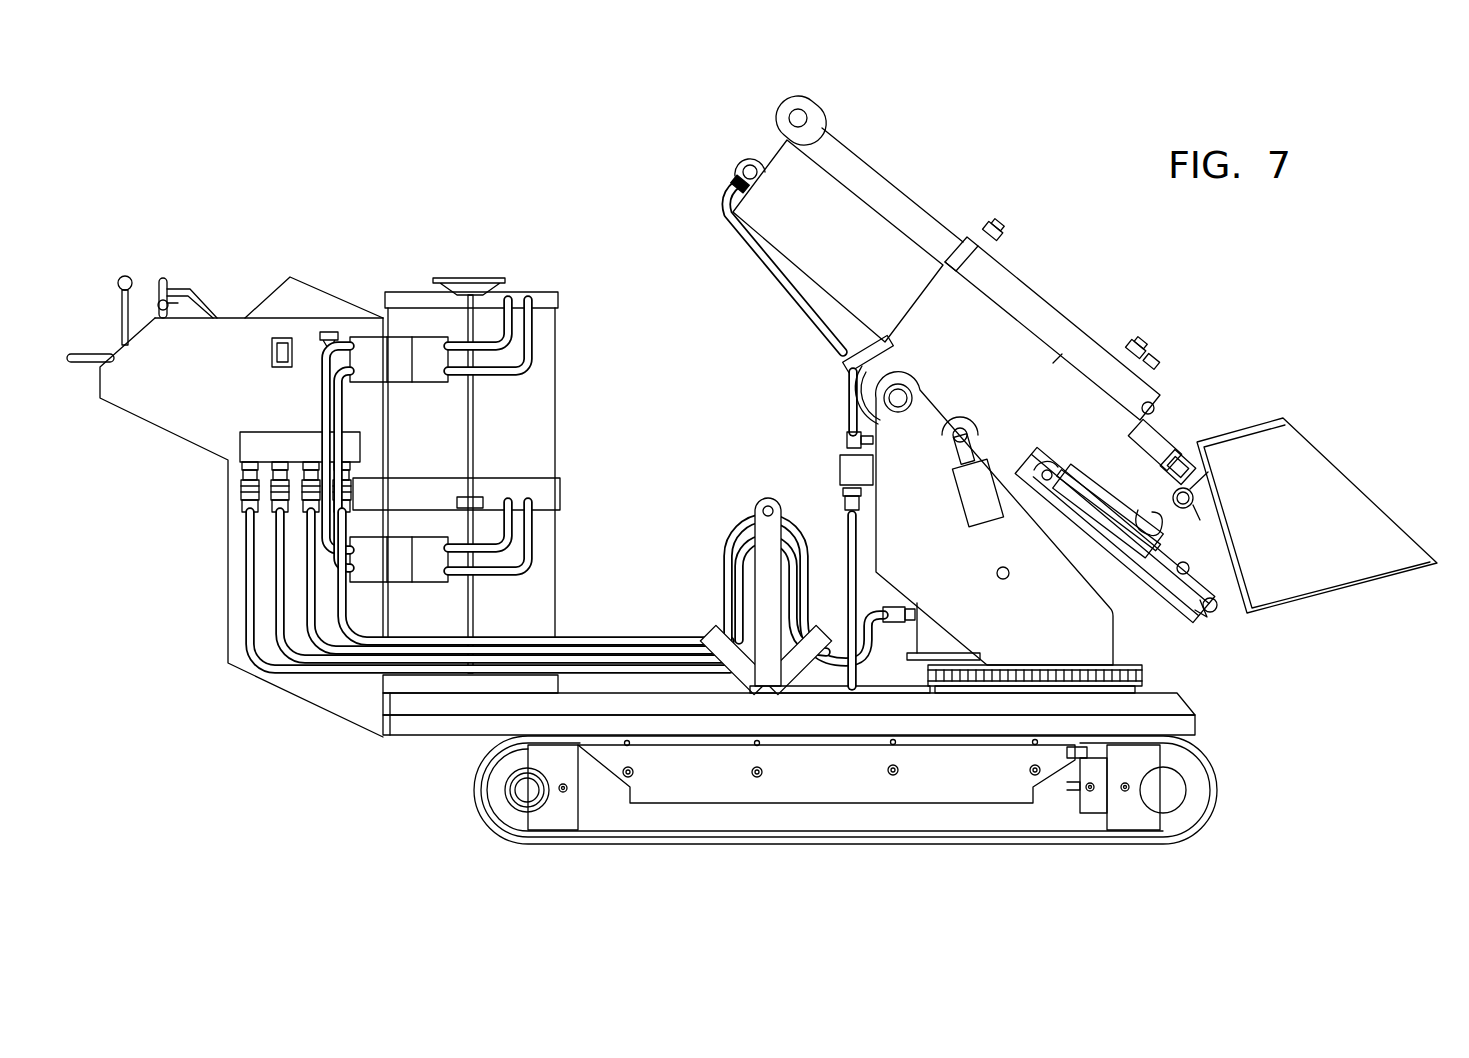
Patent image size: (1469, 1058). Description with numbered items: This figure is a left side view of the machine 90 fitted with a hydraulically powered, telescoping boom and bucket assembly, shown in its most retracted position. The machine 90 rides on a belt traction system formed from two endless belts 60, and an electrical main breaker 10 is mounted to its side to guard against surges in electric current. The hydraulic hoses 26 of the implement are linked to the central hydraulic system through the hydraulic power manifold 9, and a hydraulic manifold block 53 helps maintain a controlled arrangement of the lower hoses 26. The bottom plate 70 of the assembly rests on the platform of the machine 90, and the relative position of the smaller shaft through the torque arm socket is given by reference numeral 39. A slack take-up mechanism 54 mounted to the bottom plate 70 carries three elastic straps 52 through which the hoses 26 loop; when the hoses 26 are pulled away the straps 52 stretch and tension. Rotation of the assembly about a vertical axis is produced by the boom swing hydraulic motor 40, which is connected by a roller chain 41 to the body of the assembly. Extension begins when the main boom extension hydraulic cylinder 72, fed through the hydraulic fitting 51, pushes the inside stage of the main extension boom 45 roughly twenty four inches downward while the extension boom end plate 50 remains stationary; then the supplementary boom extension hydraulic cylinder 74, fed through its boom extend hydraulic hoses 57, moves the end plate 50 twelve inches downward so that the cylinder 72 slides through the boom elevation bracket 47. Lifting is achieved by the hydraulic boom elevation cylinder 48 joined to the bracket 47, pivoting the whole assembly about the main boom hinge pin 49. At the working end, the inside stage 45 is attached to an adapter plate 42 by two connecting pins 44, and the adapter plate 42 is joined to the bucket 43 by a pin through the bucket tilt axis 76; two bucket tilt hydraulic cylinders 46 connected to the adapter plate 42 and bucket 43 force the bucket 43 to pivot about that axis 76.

The machine 90 is at (340, 272).
The electrical main breaker 10 is at (271, 352).
The hydraulic power manifold 9 is at (266, 440).
The hydraulic hoses 26 is at (640, 640).
The bottom plate 70 is at (890, 694).
The position of smaller shaft through torque arm socket 39 is at (840, 724).
The endless belts 60 is at (1200, 815).
The elastic straps 52 is at (720, 633).
The slack take-up mechanism 54 is at (760, 503).
The hydraulic manifold block 53 is at (845, 457).
The boom swing hydraulic motor 40 is at (923, 641).
The main boom hinge pin 49 is at (902, 400).
The hydraulic boom elevation cylinder 48 is at (985, 475).
The roller chain 41 is at (1002, 666).
The main boom extension hydraulic cylinder 72 is at (790, 245).
The extension boom end plate 50 is at (778, 137).
The hydraulic fitting 51 is at (742, 170).
The boom extend hydraulic hoses 57 is at (1088, 318).
The supplementary boom extension hydraulic cylinder 74 is at (1030, 300).
The boom elevation bracket 47 is at (1055, 370).
The inside stage of main extension boom 45 is at (1181, 458).
The connecting pins 44 is at (1200, 483).
The adapter plate 42 is at (1176, 592).
The bucket tilt hydraulic cylinders 46 is at (1092, 505).
The bucket tilt axis 76 is at (1218, 608).
The bucket 43 is at (1332, 575).